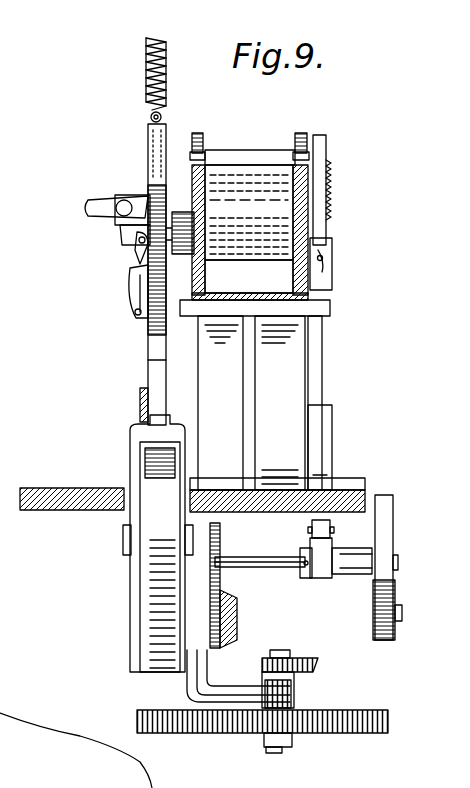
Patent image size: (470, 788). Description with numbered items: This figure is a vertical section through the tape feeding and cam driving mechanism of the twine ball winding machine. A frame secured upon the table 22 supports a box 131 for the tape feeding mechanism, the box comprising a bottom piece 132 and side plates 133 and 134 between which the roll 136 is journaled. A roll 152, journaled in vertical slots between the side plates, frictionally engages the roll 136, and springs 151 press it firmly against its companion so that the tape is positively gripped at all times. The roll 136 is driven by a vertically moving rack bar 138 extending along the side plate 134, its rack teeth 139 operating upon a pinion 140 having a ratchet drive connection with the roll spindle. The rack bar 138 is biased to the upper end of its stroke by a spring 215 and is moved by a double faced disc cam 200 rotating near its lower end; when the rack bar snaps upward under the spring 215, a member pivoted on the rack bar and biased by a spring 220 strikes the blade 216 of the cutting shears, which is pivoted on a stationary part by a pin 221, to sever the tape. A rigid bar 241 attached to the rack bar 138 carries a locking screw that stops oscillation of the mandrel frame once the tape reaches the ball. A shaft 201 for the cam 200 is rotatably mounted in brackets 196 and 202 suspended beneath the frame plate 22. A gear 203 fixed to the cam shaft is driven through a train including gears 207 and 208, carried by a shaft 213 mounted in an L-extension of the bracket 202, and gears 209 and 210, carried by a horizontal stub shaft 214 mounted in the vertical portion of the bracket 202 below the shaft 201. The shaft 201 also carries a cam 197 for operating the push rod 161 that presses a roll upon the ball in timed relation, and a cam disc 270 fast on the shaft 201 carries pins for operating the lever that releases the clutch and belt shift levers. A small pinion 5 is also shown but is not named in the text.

The spring 215 is at (166, 96).
The pinion gear 5 is at (176, 153).
The springs 151 is at (203, 138).
The roll 152 is at (250, 150).
The roll 136 is at (249, 212).
The side plate 134 is at (280, 270).
The side plate 133 is at (332, 268).
The bottom piece 132 is at (326, 325).
The push rod 161 is at (325, 380).
The box 131 is at (345, 415).
The blade 216 is at (108, 200).
The pin 221 is at (120, 228).
The pinion 140 is at (135, 246).
The spring 220 is at (128, 288).
The rack teeth 139 is at (148, 320).
The rack bar 138 is at (148, 375).
The rigid bar 241 is at (140, 405).
The table 22 is at (65, 488).
The cam disc 270 is at (385, 495).
The double faced disc cam 200 is at (150, 563).
The bracket 202 is at (187, 688).
The shaft 201 is at (258, 532).
The gear 203 is at (308, 530).
The gear 209 is at (222, 583).
The gear 210 is at (237, 608).
The cam 197 is at (306, 578).
The horizontal stub shaft 214 is at (345, 574).
The bracket 196 is at (352, 560).
The gear 208 is at (318, 660).
The shaft 213 is at (275, 757).
The gear 207 is at (330, 738).